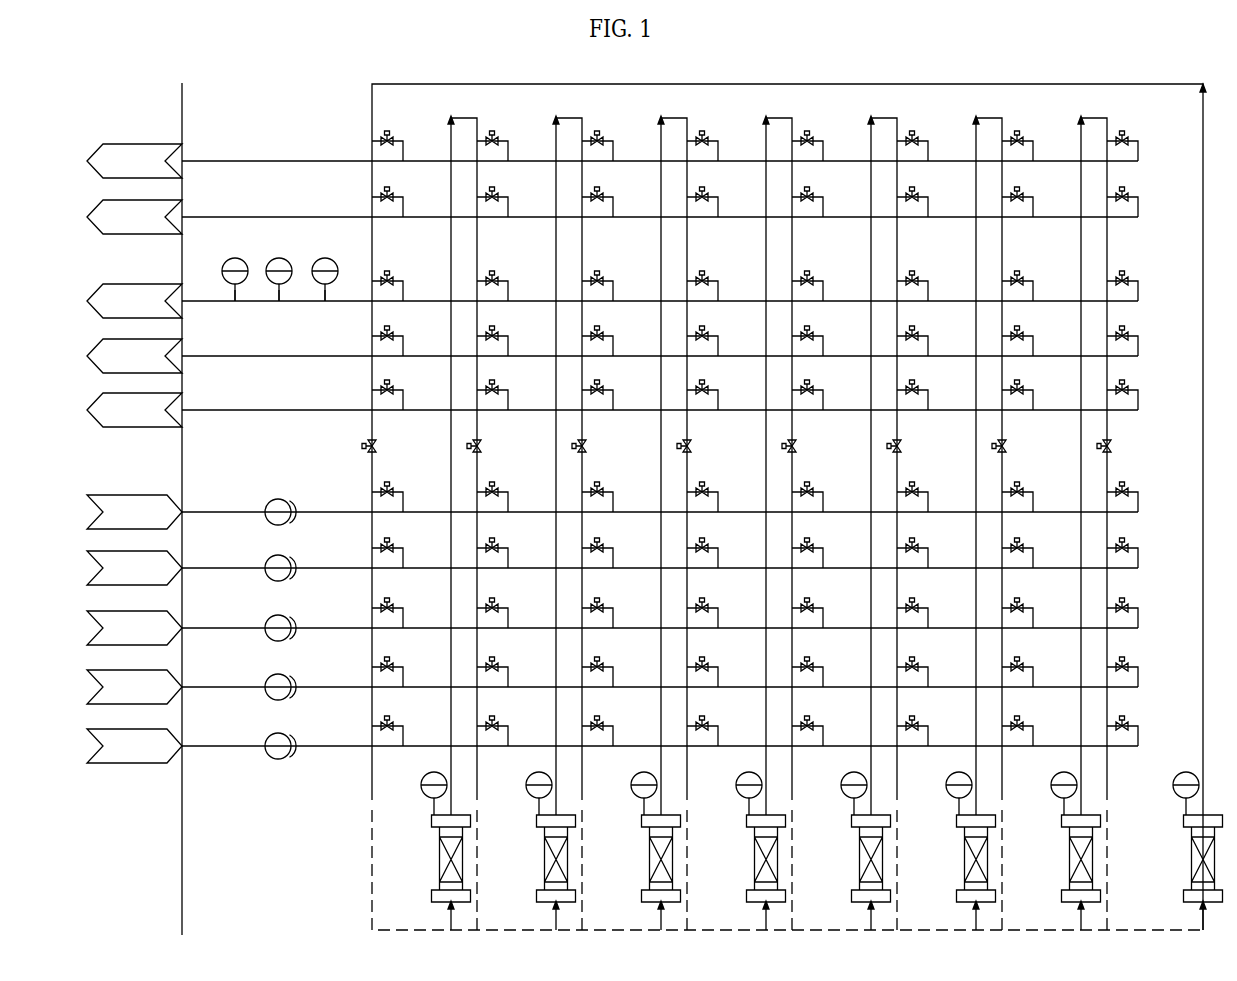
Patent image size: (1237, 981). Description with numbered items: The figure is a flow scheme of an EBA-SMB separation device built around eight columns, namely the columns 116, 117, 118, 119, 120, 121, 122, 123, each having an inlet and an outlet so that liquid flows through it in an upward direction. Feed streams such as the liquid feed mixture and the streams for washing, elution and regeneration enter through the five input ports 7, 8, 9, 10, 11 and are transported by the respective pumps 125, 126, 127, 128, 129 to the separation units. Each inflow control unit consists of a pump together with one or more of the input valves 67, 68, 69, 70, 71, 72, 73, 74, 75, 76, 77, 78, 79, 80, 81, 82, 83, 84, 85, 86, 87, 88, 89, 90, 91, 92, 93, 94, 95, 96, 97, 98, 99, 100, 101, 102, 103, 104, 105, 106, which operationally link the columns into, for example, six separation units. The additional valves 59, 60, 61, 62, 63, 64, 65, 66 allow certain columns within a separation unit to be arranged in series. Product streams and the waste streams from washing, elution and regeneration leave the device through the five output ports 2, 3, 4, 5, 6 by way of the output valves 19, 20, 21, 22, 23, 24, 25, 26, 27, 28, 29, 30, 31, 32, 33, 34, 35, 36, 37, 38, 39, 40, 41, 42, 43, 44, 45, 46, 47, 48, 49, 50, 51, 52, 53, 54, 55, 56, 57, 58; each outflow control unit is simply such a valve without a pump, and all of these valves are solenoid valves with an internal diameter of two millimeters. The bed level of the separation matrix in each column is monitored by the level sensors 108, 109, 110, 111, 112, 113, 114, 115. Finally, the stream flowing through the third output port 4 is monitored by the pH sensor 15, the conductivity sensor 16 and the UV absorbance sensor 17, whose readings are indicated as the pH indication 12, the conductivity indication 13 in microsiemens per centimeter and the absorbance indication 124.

The output port 1 2 is at (87, 160).
The output port 2 3 is at (87, 216).
The output port 3 4 is at (87, 300).
The output port 4 5 is at (87, 355).
The output port 5 6 is at (87, 409).
The input port 1 7 is at (87, 529).
The input port 2 8 is at (87, 585).
The input port 3 9 is at (87, 645).
The input port 4 10 is at (87, 704).
The input port 5 11 is at (87, 763).
The pH indication 12 is at (229, 290).
The conductivity indication 13 is at (274, 290).
The pH sensor 15 is at (225, 260).
The conductivity sensor 16 is at (279, 256).
The absorbance sensor 17 is at (326, 255).
The output valve V1-001 19 is at (403, 151).
The output valve V2-001 20 is at (508, 151).
The output valve V3-001 21 is at (613, 151).
The output valve V4-001 22 is at (718, 151).
The output valve V5-001 23 is at (823, 151).
The output valve V6-001 24 is at (928, 151).
The output valve V7-001 25 is at (1033, 151).
The output valve V8-001 26 is at (1138, 151).
The output valve V1-002 27 is at (403, 207).
The output valve V2-002 28 is at (508, 207).
The output valve V3-002 29 is at (613, 207).
The output valve V4-002 30 is at (718, 207).
The output valve V5-002 31 is at (823, 207).
The output valve V6-002 32 is at (928, 207).
The output valve V7-002 33 is at (1033, 207).
The output valve V8-002 34 is at (1138, 207).
The output valve V1-003 35 is at (403, 291).
The output valve V2-003 36 is at (508, 291).
The output valve V3-003 37 is at (613, 291).
The output valve V4-003 38 is at (718, 291).
The output valve V5-003 39 is at (823, 291).
The output valve V6-003 40 is at (928, 291).
The output valve V7-003 41 is at (1033, 291).
The output valve V8-003 42 is at (1138, 291).
The output valve V1-004 43 is at (403, 346).
The output valve V2-004 44 is at (508, 346).
The output valve V3-004 45 is at (613, 346).
The output valve V4-004 46 is at (718, 346).
The output valve V5-004 47 is at (823, 346).
The output valve V6-004 48 is at (928, 346).
The output valve V7-004 49 is at (1033, 346).
The output valve V8-004 50 is at (1138, 346).
The output valve V1-005 51 is at (403, 400).
The output valve V2-005 52 is at (508, 400).
The output valve V3-005 53 is at (613, 400).
The output valve V4-005 54 is at (718, 400).
The output valve V5-005 55 is at (823, 400).
The output valve V6-005 56 is at (928, 400).
The output valve V7-005 57 is at (1033, 400).
The output valve V8-005 58 is at (1138, 400).
The series valve V1-006 59 is at (375, 444).
The series valve V2-006 60 is at (480, 444).
The series valve V3-006 61 is at (585, 444).
The series valve V4-006 62 is at (690, 444).
The series valve V5-006 63 is at (795, 444).
The series valve V6-006 64 is at (900, 444).
The series valve V7-006 65 is at (1005, 444).
The series valve V8-006 66 is at (1110, 444).
The input valve V1-007 67 is at (403, 502).
The input valve V2-007 68 is at (508, 502).
The input valve V3-007 69 is at (613, 502).
The input valve V4-007 70 is at (718, 502).
The input valve V5-007 71 is at (823, 502).
The input valve V6-007 72 is at (928, 502).
The input valve V7-007 73 is at (1033, 502).
The input valve V8-007 74 is at (1138, 502).
The input valve V1-008 75 is at (403, 558).
The input valve V2-008 76 is at (508, 558).
The input valve V3-008 77 is at (613, 558).
The input valve V4-008 78 is at (718, 558).
The input valve V5-008 79 is at (823, 558).
The input valve V6-008 80 is at (928, 558).
The input valve V7-008 81 is at (1033, 558).
The input valve V8-008 82 is at (1138, 558).
The input valve V1-009 83 is at (403, 618).
The input valve V2-009 84 is at (508, 618).
The input valve V3-009 85 is at (613, 618).
The input valve V4-009 86 is at (718, 618).
The input valve V5-009 87 is at (823, 618).
The input valve V6-009 88 is at (928, 618).
The input valve V7-009 89 is at (1033, 618).
The input valve V8-009 90 is at (1138, 618).
The input valve V1-010 91 is at (403, 677).
The input valve V2-010 92 is at (508, 677).
The input valve V3-010 93 is at (613, 677).
The input valve V4-010 94 is at (718, 677).
The input valve V5-010 95 is at (823, 677).
The input valve V6-010 96 is at (928, 677).
The input valve V7-010 97 is at (1033, 677).
The input valve V8-010 98 is at (1138, 677).
The input valve V1-011 99 is at (403, 736).
The input valve V2-011 100 is at (508, 736).
The input valve V3-011 101 is at (613, 736).
The input valve V4-011 102 is at (718, 736).
The input valve V5-011 103 is at (823, 736).
The input valve V6-011 104 is at (928, 736).
The input valve V7-011 105 is at (1033, 736).
The input valve V8-011 106 is at (1138, 736).
The level sensor LI-001 108 is at (425, 775).
The level sensor LI-002 109 is at (530, 775).
The level sensor LI-003 110 is at (635, 775).
The level sensor LI-004 111 is at (740, 775).
The level sensor LI-005 112 is at (845, 775).
The level sensor LI-006 113 is at (950, 775).
The level sensor LI-007 114 is at (1055, 775).
The level sensor LI-008 115 is at (1177, 775).
The column C-001 116 is at (439, 872).
The column C-002 117 is at (544, 872).
The column C-003 118 is at (649, 872).
The column C-004 119 is at (754, 872).
The column C-005 120 is at (859, 872).
The column C-006 121 is at (964, 872).
The column C-007 122 is at (1069, 872).
The column C-008 123 is at (1191, 872).
The absorbance indication 124 is at (327, 290).
The pump 1 125 is at (284, 501).
The pump 2 126 is at (284, 557).
The pump 3 127 is at (284, 617).
The pump 4 128 is at (284, 676).
The pump 5 129 is at (284, 735).